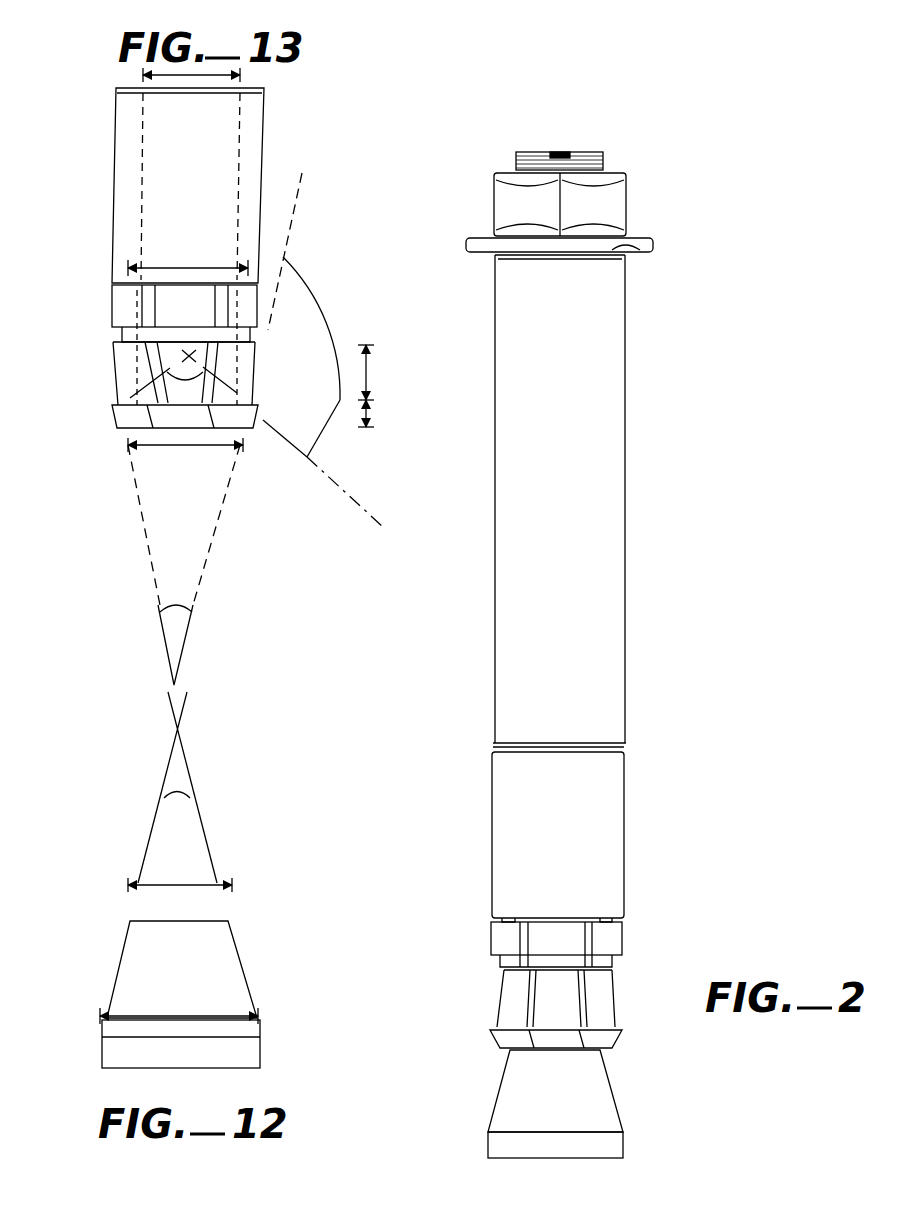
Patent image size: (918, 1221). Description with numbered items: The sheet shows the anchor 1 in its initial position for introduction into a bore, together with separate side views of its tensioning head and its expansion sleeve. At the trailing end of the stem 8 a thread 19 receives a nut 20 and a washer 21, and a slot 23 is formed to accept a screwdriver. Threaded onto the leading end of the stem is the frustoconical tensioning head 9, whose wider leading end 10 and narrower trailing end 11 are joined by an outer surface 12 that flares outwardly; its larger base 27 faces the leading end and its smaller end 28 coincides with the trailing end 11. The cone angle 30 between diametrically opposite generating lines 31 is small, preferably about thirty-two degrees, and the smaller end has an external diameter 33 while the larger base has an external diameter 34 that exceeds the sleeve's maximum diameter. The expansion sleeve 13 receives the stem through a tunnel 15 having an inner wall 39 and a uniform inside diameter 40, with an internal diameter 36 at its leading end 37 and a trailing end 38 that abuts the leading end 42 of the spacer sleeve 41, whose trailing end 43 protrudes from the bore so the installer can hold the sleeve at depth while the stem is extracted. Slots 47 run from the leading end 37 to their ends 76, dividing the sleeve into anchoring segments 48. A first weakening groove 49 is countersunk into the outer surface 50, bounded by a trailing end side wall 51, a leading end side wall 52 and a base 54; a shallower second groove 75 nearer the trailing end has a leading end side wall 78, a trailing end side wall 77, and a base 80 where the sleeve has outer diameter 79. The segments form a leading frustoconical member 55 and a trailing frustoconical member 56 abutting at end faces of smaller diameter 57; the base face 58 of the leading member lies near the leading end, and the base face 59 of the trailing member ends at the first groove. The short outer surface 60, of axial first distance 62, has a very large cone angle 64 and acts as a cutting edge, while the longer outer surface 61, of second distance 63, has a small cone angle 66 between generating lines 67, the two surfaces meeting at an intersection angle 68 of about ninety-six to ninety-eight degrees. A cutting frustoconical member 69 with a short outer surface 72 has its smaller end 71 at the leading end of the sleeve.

In FIG. 2, the anchor 1 is at (732, 158).
In FIG. 2, the trailing end of the stem 8 is at (590, 150).
In FIG. 12, the tensioning head 9 is at (256, 1002).
In FIG. 2, the tensioning head 9 is at (616, 1108).
In FIG. 12, the leading end of the tensioning head 10 is at (250, 1068).
In FIG. 2, the leading end of the tensioning head 10 is at (608, 1158).
In FIG. 12, the trailing end of the tensioning head 11 is at (222, 918).
In FIG. 12, the outer surface of the tensioning head 12 is at (230, 985).
In FIG. 2, the outer surface of the tensioning head 12 is at (526, 1100).
In FIG. 13, the expansion sleeve 13 is at (270, 178).
In FIG. 2, the expansion sleeve 13 is at (628, 798).
In FIG. 13, the tunnel 15 is at (140, 78).
In FIG. 2, the thread 19 is at (605, 170).
In FIG. 2, the nut 20 is at (496, 200).
In FIG. 2, the washer 21 is at (466, 245).
In FIG. 2, the slot 23 is at (568, 150).
In FIG. 12, the larger base of the tensioning head 27 is at (262, 1036).
In FIG. 2, the larger base of the tensioning head 27 is at (625, 1134).
In FIG. 12, the smaller end of the tensioning head 28 is at (240, 922).
In FIG. 12, the cone angle 30 is at (175, 800).
In FIG. 12, the generating lines 31 is at (142, 862).
In FIG. 12, the external diameter of the smaller end 33 is at (142, 887).
In FIG. 12, the external diameter of the larger base 34 is at (128, 1003).
In FIG. 13, the internal diameter of the tunnel 36 is at (214, 452).
In FIG. 13, the leading end of the expansion sleeve 37 is at (300, 410).
In FIG. 13, the trailing end of the expansion sleeve 38 is at (250, 100).
In FIG. 2, the trailing end of the expansion sleeve 38 is at (505, 745).
In FIG. 13, the inner wall 39 is at (242, 132).
In FIG. 13, the inside diameter 40 is at (240, 101).
In FIG. 2, the spacer sleeve 41 is at (632, 430).
In FIG. 2, the leading end of the spacer sleeve 42 is at (618, 765).
In FIG. 2, the trailing end of the spacer sleeve 43 is at (636, 252).
In FIG. 2, the slots 47 is at (625, 940).
In FIG. 13, the anchoring segments 48 is at (258, 374).
In FIG. 2, the first weakening grooves 49 is at (502, 975).
In FIG. 13, the outer surface of the expansion sleeve 50 is at (120, 222).
In FIG. 2, the outer surface of the expansion sleeve 50 is at (604, 838).
In FIG. 2, the trailing end side wall of the first groove 51 is at (616, 964).
In FIG. 13, the leading end side wall of the first groove 52 is at (258, 342).
In FIG. 2, the leading end side wall of the first groove 52 is at (565, 972).
In FIG. 13, the base of the first groove 54 is at (112, 386).
In FIG. 2, the base of the first groove 54 is at (498, 975).
In FIG. 13, the leading frustoconical member 55 is at (112, 400).
In FIG. 13, the trailing frustoconical member 56 is at (110, 352).
In FIG. 13, the end faces of smaller diameter 57 is at (258, 404).
In FIG. 13, the base face of the leading frustoconical member 58 is at (112, 422).
In FIG. 2, the base face of the leading frustoconical member 58 is at (622, 1038).
In FIG. 13, the base face of the trailing frustoconical member 59 is at (110, 340).
In FIG. 2, the base face of the trailing frustoconical member 59 is at (495, 985).
In FIG. 13, the outer surface of the leading frustoconical member 60 is at (140, 470).
In FIG. 13, the outer surface of the trailing frustoconical member 61 is at (180, 290).
In FIG. 13, the first distance 62 is at (373, 414).
In FIG. 13, the second distance 63 is at (372, 364).
In FIG. 13, the cone angle of the leading frustoconical member 64 is at (183, 374).
In FIG. 13, the cone angle of the trailing frustoconical member 66 is at (168, 603).
In FIG. 13, the generating lines of the trailing frustoconical member 67 is at (160, 630).
In FIG. 13, the intersection angle 68 is at (338, 292).
In FIG. 13, the cutting frustoconical member 69 is at (117, 428).
In FIG. 13, the smaller end of the cutting frustoconical member 71 is at (113, 448).
In FIG. 13, the outer surface of the cutting frustoconical member 72 is at (190, 430).
In FIG. 13, the second grooves 75 is at (148, 290).
In FIG. 2, the second grooves 75 is at (512, 920).
In FIG. 2, the ends of the slots 76 is at (525, 935).
In FIG. 13, the trailing end side wall of the second groove 77 is at (285, 251).
In FIG. 13, the leading end side wall of the second groove 78 is at (266, 290).
In FIG. 13, the outer diameter at the second groove 79 is at (126, 268).
In FIG. 13, the base of the second groove 80 is at (213, 245).